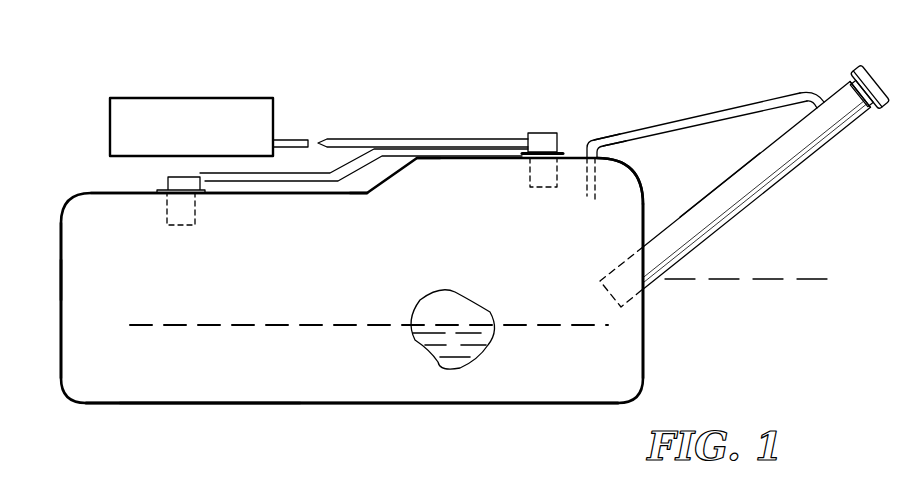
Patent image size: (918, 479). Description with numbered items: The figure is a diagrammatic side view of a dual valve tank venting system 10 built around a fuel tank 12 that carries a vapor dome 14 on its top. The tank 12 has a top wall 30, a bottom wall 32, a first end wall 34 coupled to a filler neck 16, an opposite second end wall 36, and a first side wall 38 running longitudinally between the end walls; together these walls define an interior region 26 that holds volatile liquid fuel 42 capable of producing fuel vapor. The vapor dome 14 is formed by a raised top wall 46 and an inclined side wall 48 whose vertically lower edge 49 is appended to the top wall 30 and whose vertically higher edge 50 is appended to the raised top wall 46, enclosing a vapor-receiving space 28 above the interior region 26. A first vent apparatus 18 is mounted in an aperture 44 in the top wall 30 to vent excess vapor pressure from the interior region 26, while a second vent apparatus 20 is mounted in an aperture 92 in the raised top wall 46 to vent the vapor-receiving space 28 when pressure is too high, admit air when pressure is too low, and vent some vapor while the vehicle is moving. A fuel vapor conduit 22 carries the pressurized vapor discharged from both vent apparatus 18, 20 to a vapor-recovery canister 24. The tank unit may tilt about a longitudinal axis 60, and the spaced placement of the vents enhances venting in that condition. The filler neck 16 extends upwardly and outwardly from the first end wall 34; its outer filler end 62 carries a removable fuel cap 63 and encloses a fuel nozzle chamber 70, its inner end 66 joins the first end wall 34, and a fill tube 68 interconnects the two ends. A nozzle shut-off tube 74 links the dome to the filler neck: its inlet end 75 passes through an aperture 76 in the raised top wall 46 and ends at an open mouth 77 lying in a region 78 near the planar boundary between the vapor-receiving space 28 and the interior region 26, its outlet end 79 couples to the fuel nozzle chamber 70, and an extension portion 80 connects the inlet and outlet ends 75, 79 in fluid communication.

The tank venting system 10 is at (503, 108).
The tank 12 is at (55, 289).
The vapor dome 14 is at (648, 178).
The filler neck 16 is at (731, 238).
The first vent apparatus 18 is at (153, 180).
The second vent apparatus 20 is at (560, 124).
The fuel vapor conduit 22 is at (368, 131).
The vapor-recovery canister 24 is at (237, 98).
The interior region 26 is at (114, 272).
The vapor-receiving space 28 is at (449, 212).
The top wall 30 is at (244, 190).
The bottom wall 32 is at (270, 407).
The first end wall 34 is at (644, 352).
The second end wall 36 is at (60, 370).
The first side wall 38 is at (162, 390).
The volatile liquid fuel 42 is at (478, 337).
The aperture 44 is at (192, 198).
The raised top wall 46 is at (583, 152).
The inclined side wall 48 is at (388, 166).
The vertically lower edge 49 is at (362, 192).
The vertically higher edge 50 is at (428, 157).
The longitudinal axis 60 is at (58, 278).
The outer filler end 62 is at (854, 121).
The fuel cap 63 is at (862, 66).
The inner end 66 is at (600, 283).
The fill tube 68 is at (720, 185).
The fuel nozzle chamber 70 is at (818, 128).
The nozzle shut-off tube 74 is at (754, 100).
The inlet end 75 is at (583, 190).
The aperture 76 is at (599, 153).
The open mouth 77 is at (592, 200).
The region 78 is at (606, 200).
The outlet end 79 is at (818, 96).
The extension portion 80 is at (703, 117).
The aperture 92 is at (538, 162).